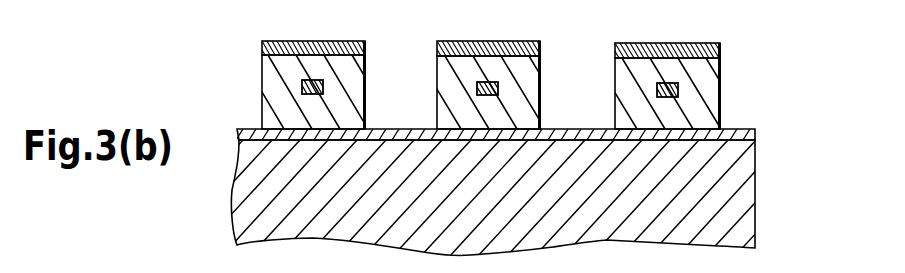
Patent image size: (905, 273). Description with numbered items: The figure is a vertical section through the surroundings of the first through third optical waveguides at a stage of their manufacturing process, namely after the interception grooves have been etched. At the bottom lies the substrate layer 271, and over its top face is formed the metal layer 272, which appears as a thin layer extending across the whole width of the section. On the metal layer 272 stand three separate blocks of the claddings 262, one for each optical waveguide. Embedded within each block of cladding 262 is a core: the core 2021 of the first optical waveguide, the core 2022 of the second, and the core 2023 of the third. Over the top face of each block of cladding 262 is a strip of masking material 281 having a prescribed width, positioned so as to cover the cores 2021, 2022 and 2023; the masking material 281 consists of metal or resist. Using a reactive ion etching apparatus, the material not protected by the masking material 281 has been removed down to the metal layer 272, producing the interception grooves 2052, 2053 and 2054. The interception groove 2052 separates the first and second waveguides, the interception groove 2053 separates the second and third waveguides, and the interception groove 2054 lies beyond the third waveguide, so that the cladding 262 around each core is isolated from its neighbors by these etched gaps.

The substrate layer 271 is at (755, 205).
The metal layer 272 is at (755, 133).
The claddings 262 is at (268, 110).
The masking material 281 is at (310, 41).
The core 2021 is at (302, 86).
The core 2022 is at (498, 87).
The core 2023 is at (678, 88).
The interception groove 2052 is at (395, 50).
The interception groove 2053 is at (577, 53).
The interception groove 2054 is at (750, 55).